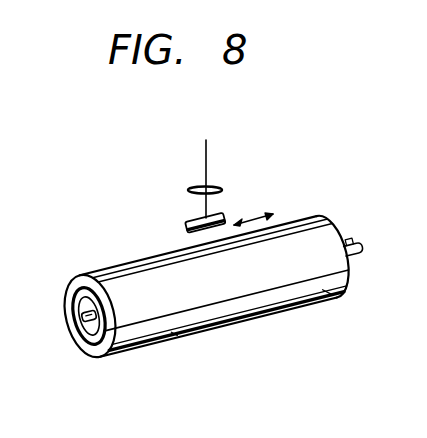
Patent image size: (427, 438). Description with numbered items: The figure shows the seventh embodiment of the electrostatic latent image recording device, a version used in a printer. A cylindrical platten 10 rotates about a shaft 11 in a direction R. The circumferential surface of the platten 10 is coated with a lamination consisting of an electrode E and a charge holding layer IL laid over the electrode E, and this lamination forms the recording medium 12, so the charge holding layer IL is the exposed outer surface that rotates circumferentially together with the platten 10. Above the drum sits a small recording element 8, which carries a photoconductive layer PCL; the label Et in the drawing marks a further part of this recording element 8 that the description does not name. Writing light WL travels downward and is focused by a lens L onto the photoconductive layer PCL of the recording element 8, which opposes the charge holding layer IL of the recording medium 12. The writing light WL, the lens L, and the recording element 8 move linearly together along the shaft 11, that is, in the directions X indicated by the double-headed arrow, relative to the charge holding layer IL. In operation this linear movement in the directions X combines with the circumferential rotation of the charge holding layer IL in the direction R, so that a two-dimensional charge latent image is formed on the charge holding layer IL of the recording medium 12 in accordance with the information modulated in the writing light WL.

The recording element 8 is at (217, 216).
The platten 10 is at (82, 308).
The shaft 11 is at (78, 346).
The recording medium 12 is at (165, 330).
The electrode E is at (95, 348).
The charge holding layer IL is at (328, 306).
The direction of rotation R is at (374, 223).
The lens L is at (218, 187).
The writing light WL is at (205, 163).
The pickup top surface Et is at (196, 220).
The photoconductive layer PCL is at (182, 228).
The directions of linear movement X is at (267, 209).